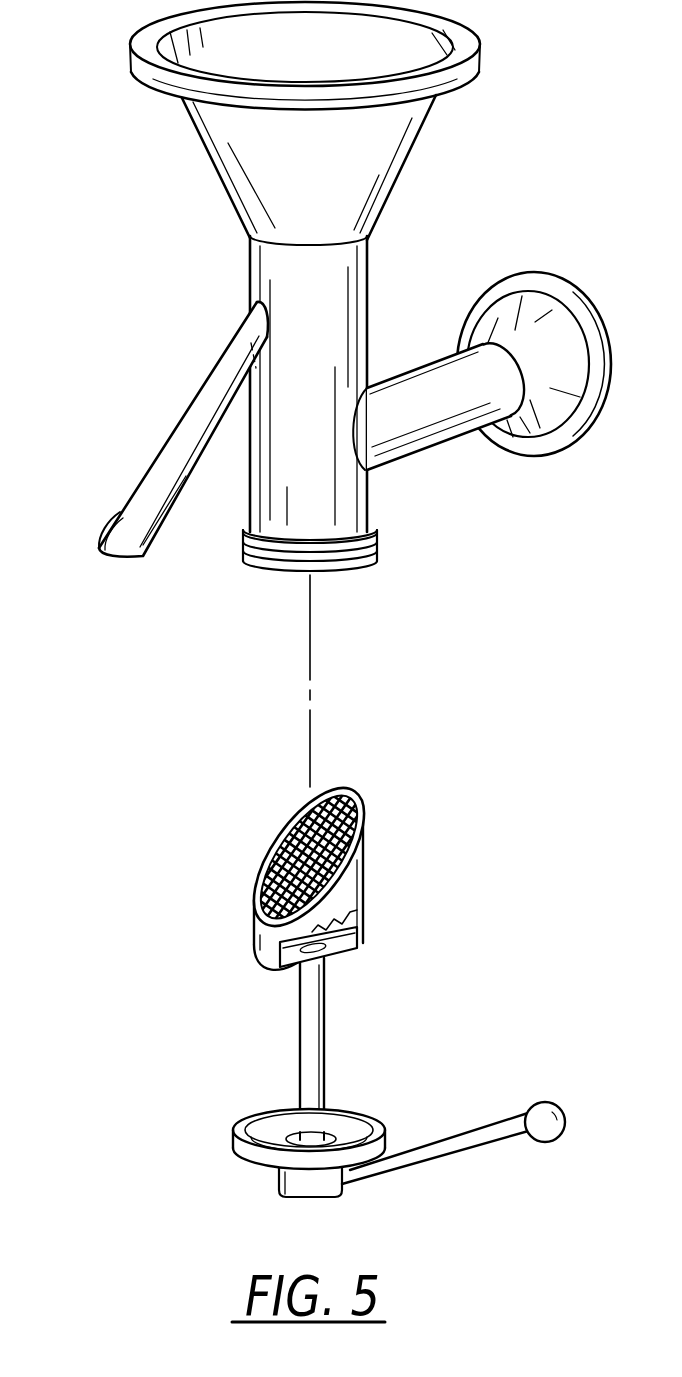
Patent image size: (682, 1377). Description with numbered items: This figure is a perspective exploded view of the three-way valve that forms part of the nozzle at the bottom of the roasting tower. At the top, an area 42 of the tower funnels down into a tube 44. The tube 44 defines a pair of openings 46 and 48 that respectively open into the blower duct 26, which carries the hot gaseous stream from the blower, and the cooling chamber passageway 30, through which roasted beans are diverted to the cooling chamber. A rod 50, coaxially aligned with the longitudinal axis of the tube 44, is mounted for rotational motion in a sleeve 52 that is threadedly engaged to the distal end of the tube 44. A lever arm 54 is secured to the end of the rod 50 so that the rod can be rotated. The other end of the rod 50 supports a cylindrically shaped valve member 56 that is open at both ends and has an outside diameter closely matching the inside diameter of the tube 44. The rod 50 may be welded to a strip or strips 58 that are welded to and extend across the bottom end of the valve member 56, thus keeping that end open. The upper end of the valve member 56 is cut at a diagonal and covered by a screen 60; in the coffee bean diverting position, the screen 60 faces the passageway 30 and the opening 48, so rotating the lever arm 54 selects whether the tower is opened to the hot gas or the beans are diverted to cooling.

The blower duct 26 is at (412, 370).
The cooling chamber passageway 30 is at (117, 512).
The area of tower 42 is at (405, 172).
The tube 44 is at (370, 250).
The opening 46 is at (393, 468).
The opening 48 is at (245, 314).
The rod 50 is at (318, 1007).
The sleeve 52 is at (233, 1153).
The lever arm 54 is at (447, 1153).
The valve member 56 is at (375, 843).
The strip 58 is at (360, 920).
The screen 60 is at (268, 853).